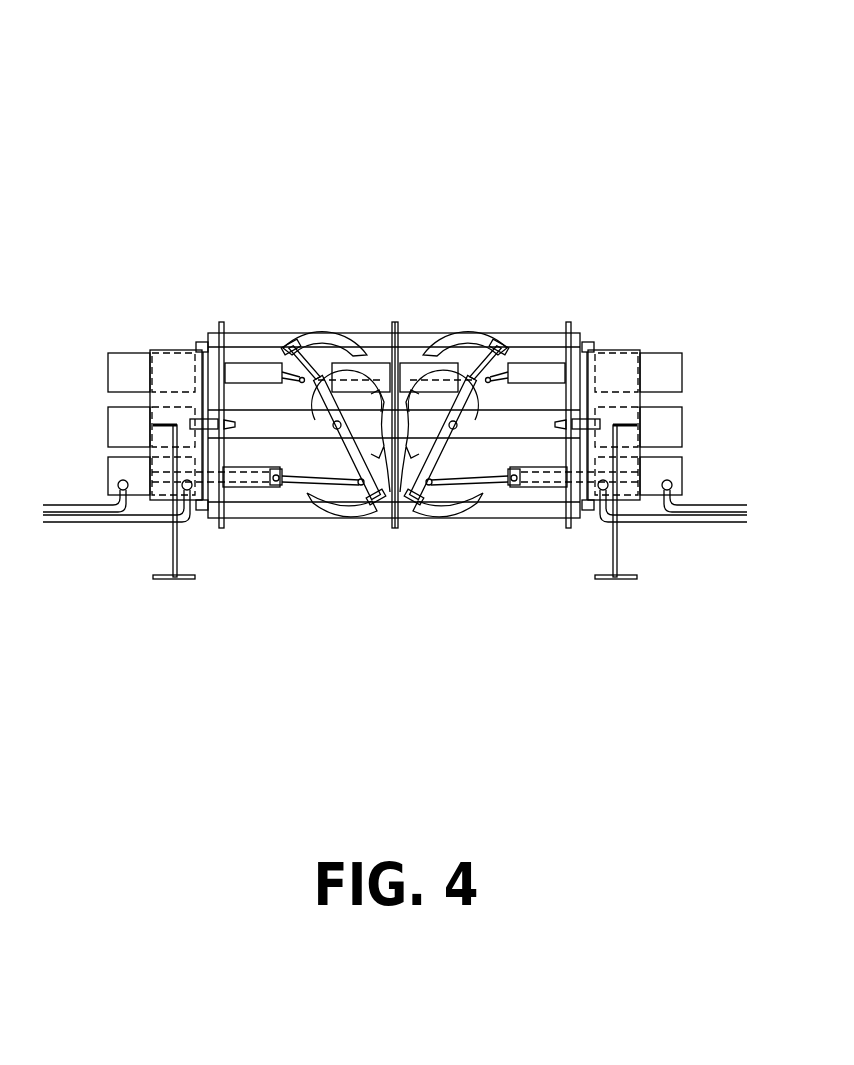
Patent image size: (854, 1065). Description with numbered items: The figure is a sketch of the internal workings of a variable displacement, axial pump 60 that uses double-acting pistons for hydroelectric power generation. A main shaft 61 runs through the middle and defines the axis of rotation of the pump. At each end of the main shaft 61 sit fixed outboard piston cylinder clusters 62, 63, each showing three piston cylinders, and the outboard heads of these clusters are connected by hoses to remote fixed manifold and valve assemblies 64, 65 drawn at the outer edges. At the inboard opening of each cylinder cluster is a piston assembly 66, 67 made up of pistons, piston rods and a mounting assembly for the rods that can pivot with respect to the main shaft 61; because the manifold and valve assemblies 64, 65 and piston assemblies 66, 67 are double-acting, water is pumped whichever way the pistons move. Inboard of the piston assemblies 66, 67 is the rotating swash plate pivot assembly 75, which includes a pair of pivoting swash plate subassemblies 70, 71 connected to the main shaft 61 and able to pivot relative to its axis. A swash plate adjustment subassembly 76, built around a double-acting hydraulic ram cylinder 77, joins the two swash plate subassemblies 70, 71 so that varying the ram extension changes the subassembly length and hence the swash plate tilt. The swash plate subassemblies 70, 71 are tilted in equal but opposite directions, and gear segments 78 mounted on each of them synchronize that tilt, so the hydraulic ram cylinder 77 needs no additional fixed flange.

The variable displacement, axial pump 60 is at (132, 107).
The main shaft 61 is at (270, 427).
The outboard piston cylinder cluster 62 is at (591, 538).
The outboard piston cylinder cluster 63 is at (205, 527).
The fixed manifold and valve assembly 64 is at (629, 528).
The fixed manifold and valve assembly 65 is at (160, 528).
The piston assembly 66 is at (548, 357).
The piston assembly 67 is at (240, 357).
The pivoting swash plate subassembly 70 is at (405, 495).
The pivoting swash plate subassembly 71 is at (335, 430).
The rotating swash plate pivot assembly 75 is at (376, 342).
The swash plate adjustment subassembly 76 is at (358, 364).
The hydraulic ram cylinder 77 is at (407, 370).
The gear segment 78 is at (390, 522).